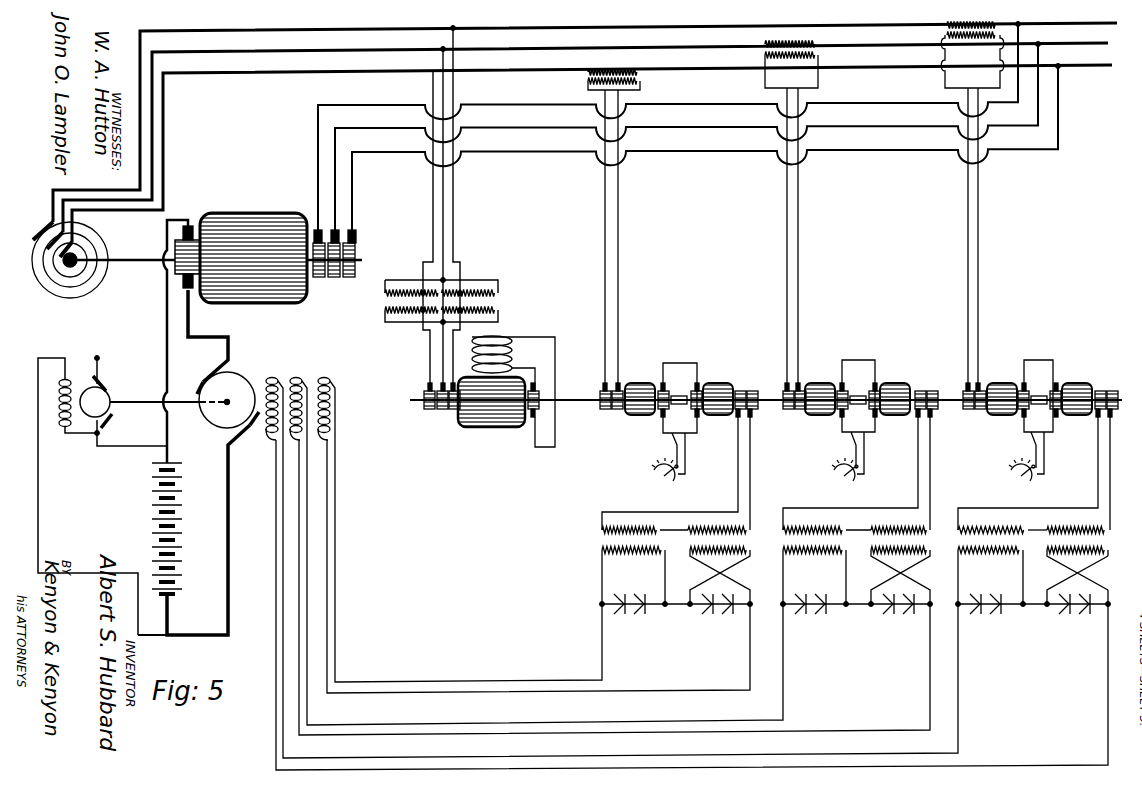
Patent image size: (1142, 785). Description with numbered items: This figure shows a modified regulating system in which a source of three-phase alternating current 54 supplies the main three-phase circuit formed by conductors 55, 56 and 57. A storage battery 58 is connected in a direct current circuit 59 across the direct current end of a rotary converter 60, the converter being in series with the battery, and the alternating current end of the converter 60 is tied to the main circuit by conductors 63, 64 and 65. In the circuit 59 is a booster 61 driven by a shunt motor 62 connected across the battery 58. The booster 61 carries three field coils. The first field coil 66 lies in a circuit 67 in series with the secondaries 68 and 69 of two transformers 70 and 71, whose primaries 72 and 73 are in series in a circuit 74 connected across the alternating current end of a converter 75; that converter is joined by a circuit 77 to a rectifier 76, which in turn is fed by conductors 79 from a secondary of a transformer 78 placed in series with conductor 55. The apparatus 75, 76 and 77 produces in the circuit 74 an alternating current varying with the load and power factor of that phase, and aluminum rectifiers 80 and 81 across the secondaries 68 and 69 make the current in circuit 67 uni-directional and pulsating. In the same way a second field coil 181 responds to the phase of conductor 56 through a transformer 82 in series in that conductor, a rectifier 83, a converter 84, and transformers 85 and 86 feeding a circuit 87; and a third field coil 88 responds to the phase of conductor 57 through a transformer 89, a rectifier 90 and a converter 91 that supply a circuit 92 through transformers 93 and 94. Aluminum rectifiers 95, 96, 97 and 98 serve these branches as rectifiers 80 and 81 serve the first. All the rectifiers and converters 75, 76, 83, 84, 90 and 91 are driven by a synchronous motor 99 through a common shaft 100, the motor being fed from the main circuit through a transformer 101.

The source of three-phase alternating current 54 is at (50, 290).
The alternating current circuit conductor 55 is at (836, 25).
The alternating current circuit conductor 56 is at (705, 50).
The alternating current circuit conductor 57 is at (566, 71).
The storage battery 58 is at (180, 535).
The direct current circuit 59 is at (165, 320).
The rotary converter 60 is at (252, 215).
The booster 61 is at (234, 378).
The shunt motor 62 is at (102, 392).
The conductor 63 is at (699, 103).
The conductor 64 is at (699, 127).
The conductor 65 is at (699, 150).
The field coil 66 is at (268, 378).
The circuit 67 is at (960, 722).
The secondary 68 is at (975, 553).
The secondary 69 is at (1108, 548).
The transformer 70 is at (958, 541).
The transformer 71 is at (1100, 537).
The primary 72 is at (983, 529).
The primary 73 is at (1071, 529).
The circuit 74 is at (1097, 456).
The converter 75 is at (1080, 381).
The rectifier 76 is at (1000, 381).
The circuit 77 is at (1041, 358).
The transformer 78 is at (945, 29).
The conductors 79 is at (966, 238).
The aluminum rectifier 80 is at (991, 612).
The aluminum rectifier 81 is at (1077, 612).
The transformer 82 is at (820, 54).
The rectifier 83 is at (816, 381).
The converter 84 is at (896, 381).
The transformer 85 is at (783, 541).
The transformer 86 is at (871, 541).
The circuit 87 is at (718, 722).
The field coil 88 is at (326, 378).
The transformer 89 is at (587, 80).
The rectifier 90 is at (638, 381).
The converter 91 is at (718, 381).
The circuit 92 is at (492, 679).
The transformer 93 is at (600, 533).
The transformer 94 is at (700, 542).
The aluminum rectifier 95 is at (821, 612).
The aluminum rectifier 96 is at (906, 612).
The aluminum rectifier 97 is at (646, 612).
The aluminum rectifier 98 is at (724, 612).
The synchronous motor 99 is at (501, 430).
The shaft 100 is at (578, 397).
The transformer 101 is at (500, 301).
The field coil 181 is at (297, 378).